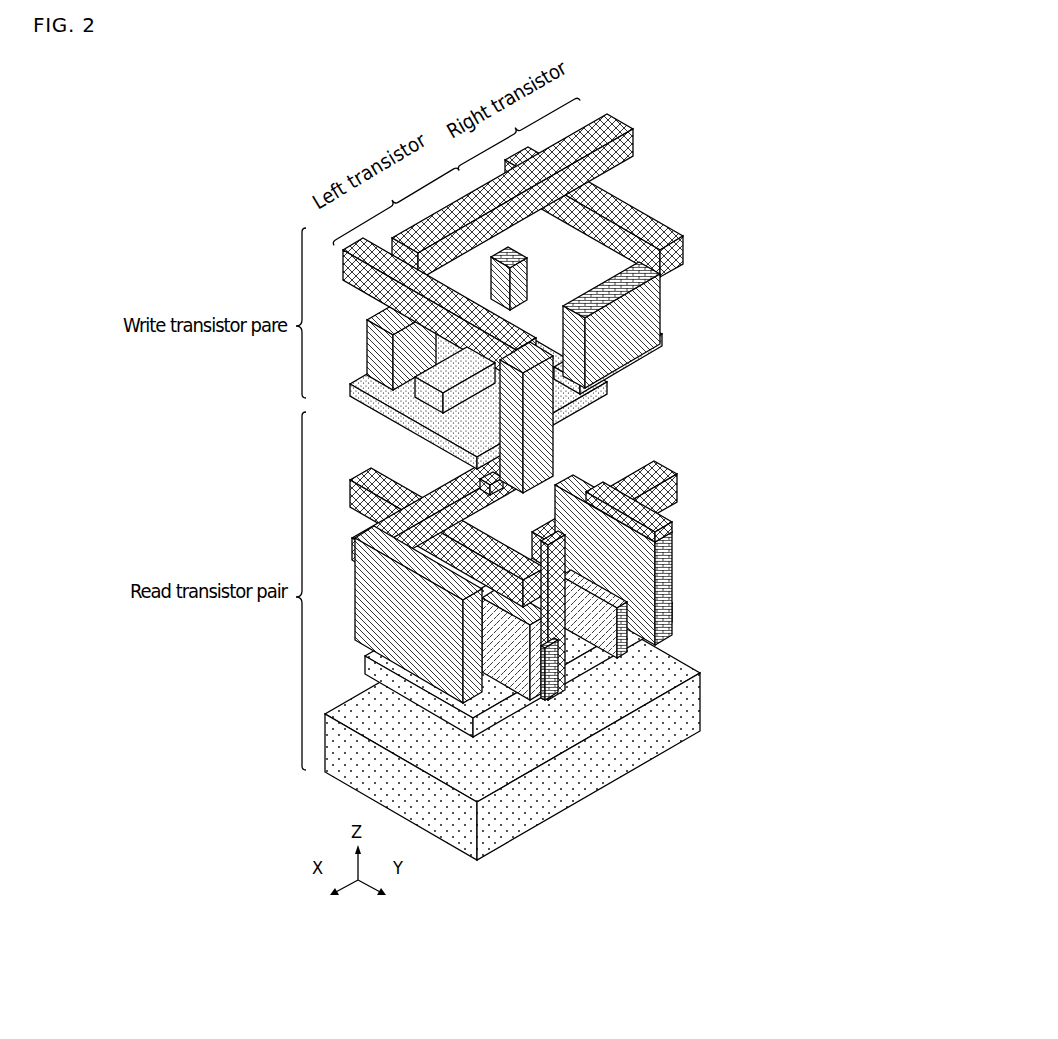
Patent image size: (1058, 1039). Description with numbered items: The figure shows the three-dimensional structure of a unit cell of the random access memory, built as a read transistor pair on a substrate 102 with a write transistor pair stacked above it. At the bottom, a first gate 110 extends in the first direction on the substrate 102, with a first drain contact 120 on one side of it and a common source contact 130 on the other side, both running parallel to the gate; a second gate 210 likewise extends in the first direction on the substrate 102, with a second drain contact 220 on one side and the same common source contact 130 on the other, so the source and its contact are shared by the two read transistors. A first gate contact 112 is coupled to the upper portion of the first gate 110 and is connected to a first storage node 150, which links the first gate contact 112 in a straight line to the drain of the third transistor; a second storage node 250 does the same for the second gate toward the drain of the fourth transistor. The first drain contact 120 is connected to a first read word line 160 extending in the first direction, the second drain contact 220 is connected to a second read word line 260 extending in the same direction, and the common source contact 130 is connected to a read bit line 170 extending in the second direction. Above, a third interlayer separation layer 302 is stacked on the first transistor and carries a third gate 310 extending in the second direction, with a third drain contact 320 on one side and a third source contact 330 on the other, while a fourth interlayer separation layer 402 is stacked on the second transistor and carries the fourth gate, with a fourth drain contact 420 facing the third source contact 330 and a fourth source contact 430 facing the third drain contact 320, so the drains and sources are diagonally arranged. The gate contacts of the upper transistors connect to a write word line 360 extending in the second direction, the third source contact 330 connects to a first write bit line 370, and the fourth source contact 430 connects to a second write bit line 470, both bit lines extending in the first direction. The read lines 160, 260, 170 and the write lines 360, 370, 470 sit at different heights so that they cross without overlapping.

The substrate 102 is at (643, 746).
The first gate 110 is at (525, 648).
The first gate contact 112 is at (542, 690).
The first drain contact 120 is at (375, 618).
The common source contact 130 is at (490, 521).
The first storage node 150 is at (673, 532).
The first read word line 160 is at (360, 500).
The read bit line 170 is at (420, 455).
The second gate 210 is at (625, 622).
The second drain contact 220 is at (684, 577).
The second storage node 250 is at (478, 478).
The second read word line 260 is at (680, 487).
The third interlayer separation layer 302 is at (585, 417).
The third gate 310 is at (425, 388).
The third drain contact 320 is at (555, 398).
The third source contact 330 is at (370, 352).
The write word line 360 is at (630, 147).
The first write bit line 370 is at (350, 266).
The fourth interlayer separation layer 402 is at (662, 371).
The fourth drain contact 420 is at (520, 244).
The fourth source contact 430 is at (665, 316).
The second write bit line 470 is at (684, 248).